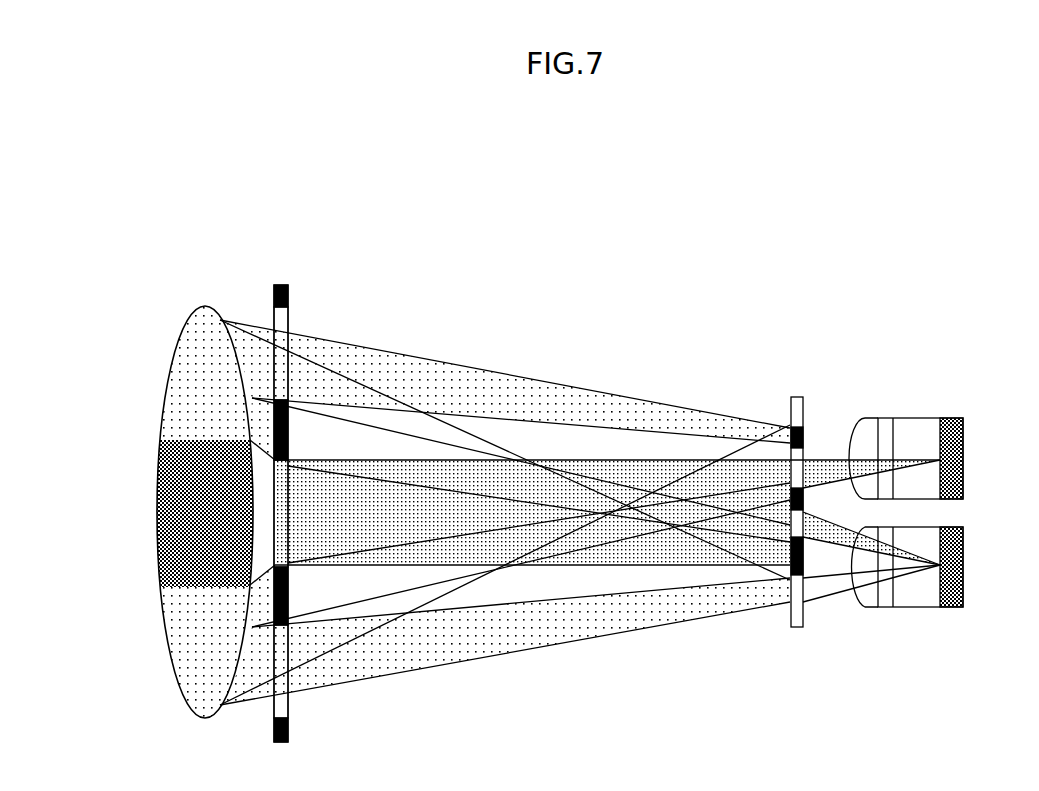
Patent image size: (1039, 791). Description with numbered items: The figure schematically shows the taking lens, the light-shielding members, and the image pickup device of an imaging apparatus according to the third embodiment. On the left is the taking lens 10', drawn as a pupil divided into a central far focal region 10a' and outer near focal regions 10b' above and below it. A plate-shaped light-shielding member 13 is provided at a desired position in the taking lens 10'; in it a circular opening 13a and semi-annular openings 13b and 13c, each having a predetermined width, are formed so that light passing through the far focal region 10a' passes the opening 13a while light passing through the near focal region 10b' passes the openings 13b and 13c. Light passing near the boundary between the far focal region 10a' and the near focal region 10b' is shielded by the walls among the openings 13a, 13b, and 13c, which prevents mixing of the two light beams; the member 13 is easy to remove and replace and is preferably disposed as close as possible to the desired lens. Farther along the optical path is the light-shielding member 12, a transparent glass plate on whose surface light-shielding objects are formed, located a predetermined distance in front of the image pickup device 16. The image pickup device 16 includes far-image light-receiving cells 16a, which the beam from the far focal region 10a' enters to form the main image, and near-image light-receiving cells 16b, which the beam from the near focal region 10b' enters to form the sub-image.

The taking lens 10' is at (190, 448).
The far focal region 10a' is at (175, 513).
The near focal region 10b' is at (181, 513).
The light-shielding member 13 is at (280, 276).
The circular opening 13a is at (284, 512).
The semi-annular opening 13b is at (288, 310).
The semi-annular opening 13c is at (285, 728).
The light-shielding member 12 is at (793, 390).
The image pickup device 16 is at (937, 477).
The far-image light-receiving cells 16a is at (963, 459).
The near-image light-receiving cells 16b is at (963, 565).